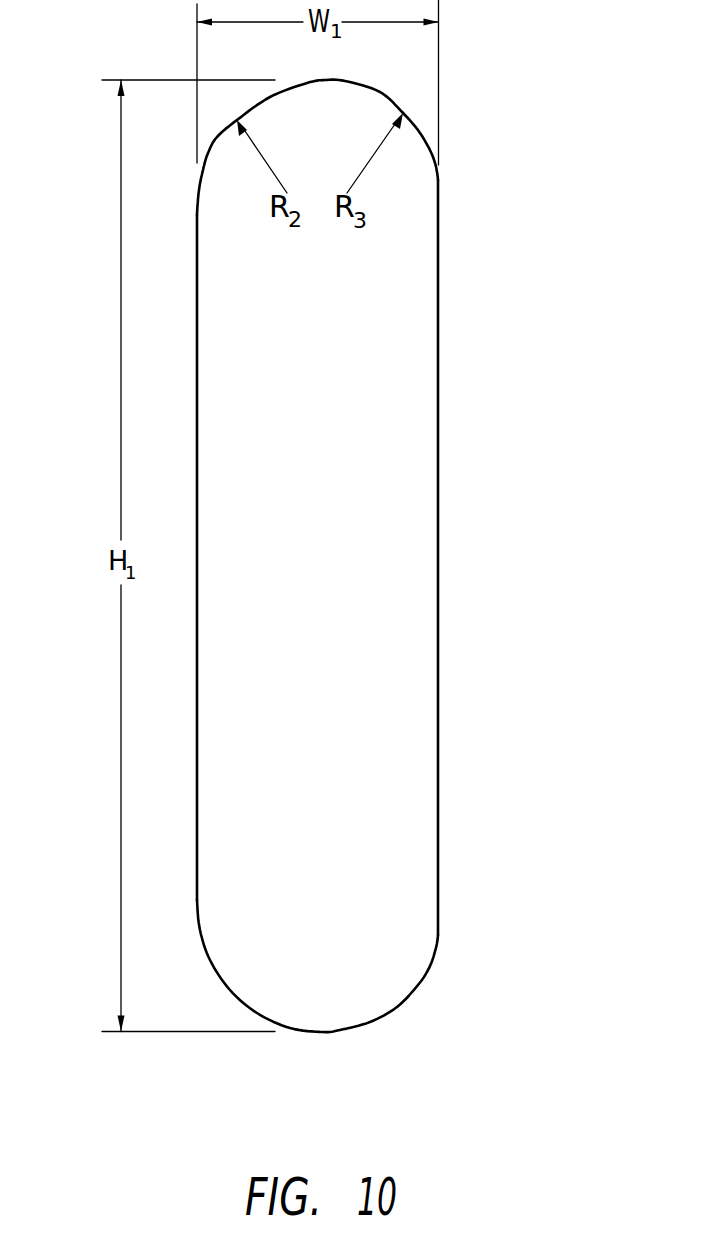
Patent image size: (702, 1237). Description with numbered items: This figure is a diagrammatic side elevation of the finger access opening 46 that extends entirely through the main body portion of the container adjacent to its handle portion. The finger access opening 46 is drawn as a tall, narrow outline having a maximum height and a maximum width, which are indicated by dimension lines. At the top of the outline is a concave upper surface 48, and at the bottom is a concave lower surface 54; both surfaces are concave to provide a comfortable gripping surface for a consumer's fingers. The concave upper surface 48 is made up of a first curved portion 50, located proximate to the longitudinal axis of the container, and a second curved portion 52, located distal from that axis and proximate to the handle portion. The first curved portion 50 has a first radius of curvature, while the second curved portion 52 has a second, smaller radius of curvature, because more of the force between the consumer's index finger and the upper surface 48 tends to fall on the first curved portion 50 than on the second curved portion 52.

The finger access opening 46 is at (390, 485).
The concave upper surface 48 is at (318, 182).
The first curved portion 50 is at (222, 133).
The second curved portion 52 is at (415, 122).
The concave lower surface 54 is at (325, 1030).